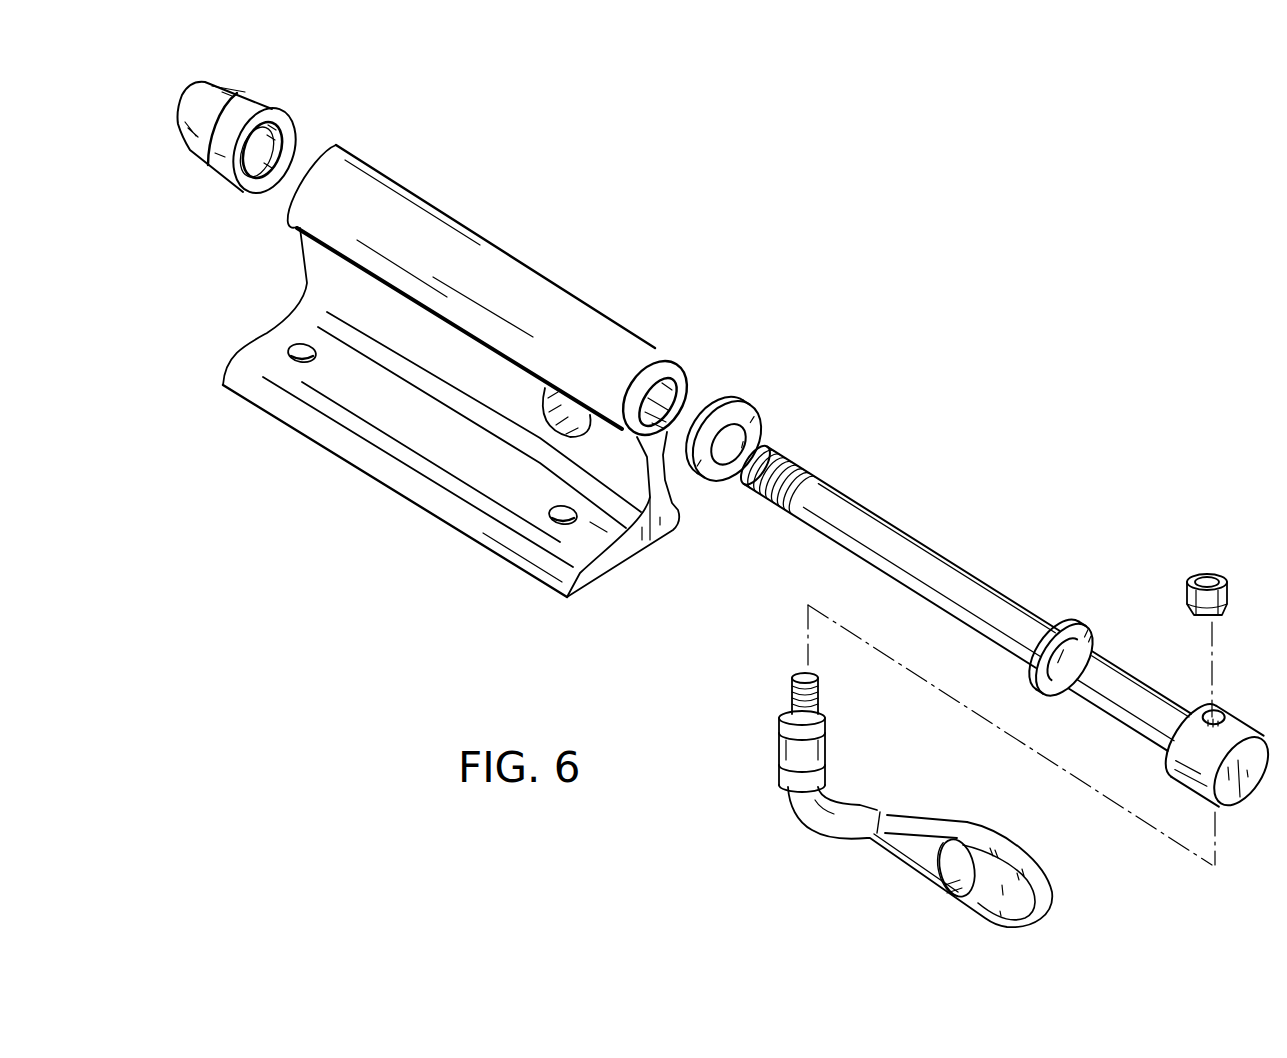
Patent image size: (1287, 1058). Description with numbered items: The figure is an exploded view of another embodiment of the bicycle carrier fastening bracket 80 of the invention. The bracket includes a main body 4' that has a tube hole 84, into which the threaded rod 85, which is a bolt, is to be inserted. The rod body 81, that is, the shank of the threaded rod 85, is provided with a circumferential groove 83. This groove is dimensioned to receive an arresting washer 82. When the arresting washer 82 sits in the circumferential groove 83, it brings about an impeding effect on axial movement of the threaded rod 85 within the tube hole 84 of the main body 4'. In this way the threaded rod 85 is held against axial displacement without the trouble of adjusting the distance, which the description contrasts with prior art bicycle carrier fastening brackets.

The main body 4' is at (451, 384).
The bicycle carrier fastening bracket 80 is at (802, 364).
The rod body 81 is at (830, 520).
The arresting washer 82 is at (1068, 630).
The circumferential groove 83 is at (1067, 672).
The tube hole 84 is at (662, 380).
The threaded rod 85 is at (907, 570).